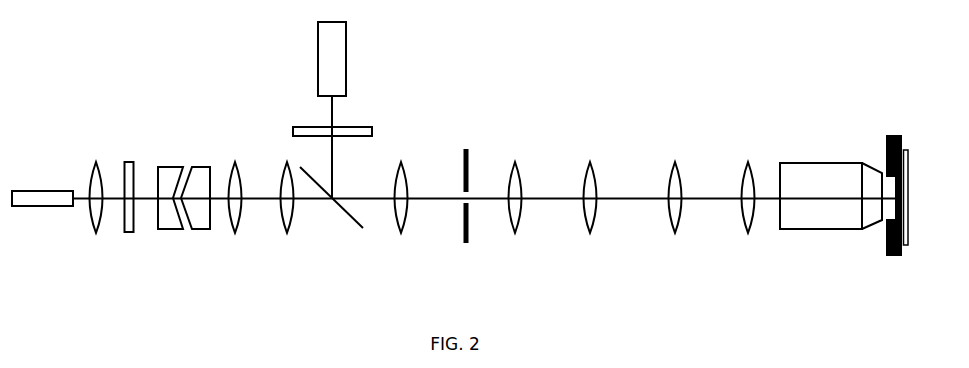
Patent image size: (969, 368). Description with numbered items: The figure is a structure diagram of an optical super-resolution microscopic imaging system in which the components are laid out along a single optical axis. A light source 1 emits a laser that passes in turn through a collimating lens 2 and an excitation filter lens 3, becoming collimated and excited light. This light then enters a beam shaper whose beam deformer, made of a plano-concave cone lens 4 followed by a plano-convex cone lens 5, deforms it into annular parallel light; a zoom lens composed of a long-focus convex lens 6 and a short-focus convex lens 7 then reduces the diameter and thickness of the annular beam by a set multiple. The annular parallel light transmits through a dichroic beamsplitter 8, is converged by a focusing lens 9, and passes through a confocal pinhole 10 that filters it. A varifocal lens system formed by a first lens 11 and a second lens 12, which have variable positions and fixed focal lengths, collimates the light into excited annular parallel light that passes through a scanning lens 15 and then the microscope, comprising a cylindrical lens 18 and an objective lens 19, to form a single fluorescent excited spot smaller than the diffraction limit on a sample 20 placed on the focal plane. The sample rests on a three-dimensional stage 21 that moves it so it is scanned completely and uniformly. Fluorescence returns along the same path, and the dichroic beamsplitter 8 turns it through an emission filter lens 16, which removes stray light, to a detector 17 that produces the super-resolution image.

The light source 1 is at (42, 236).
The collimating lens 2 is at (96, 221).
The excitation filter lens 3 is at (128, 221).
The plano-concave cone lens 4 is at (170, 224).
The plano-convex cone lens 5 is at (195, 224).
The long-focus convex lens 6 is at (235, 221).
The short-focus convex lens 7 is at (287, 221).
The dichroic beamsplitter 8 is at (331, 224).
The focusing lens 9 is at (401, 221).
The confocal pinhole 10 is at (467, 215).
The first lens 11 is at (520, 221).
The second lens 12 is at (593, 221).
The scanning lens 15 is at (677, 221).
The emission filter lens 16 is at (315, 132).
The detector 17 is at (302, 59).
The cylindrical lens 18 is at (750, 221).
The objective lens 19 is at (831, 222).
The sample 20 is at (916, 216).
The three-dimensional stage 21 is at (889, 209).